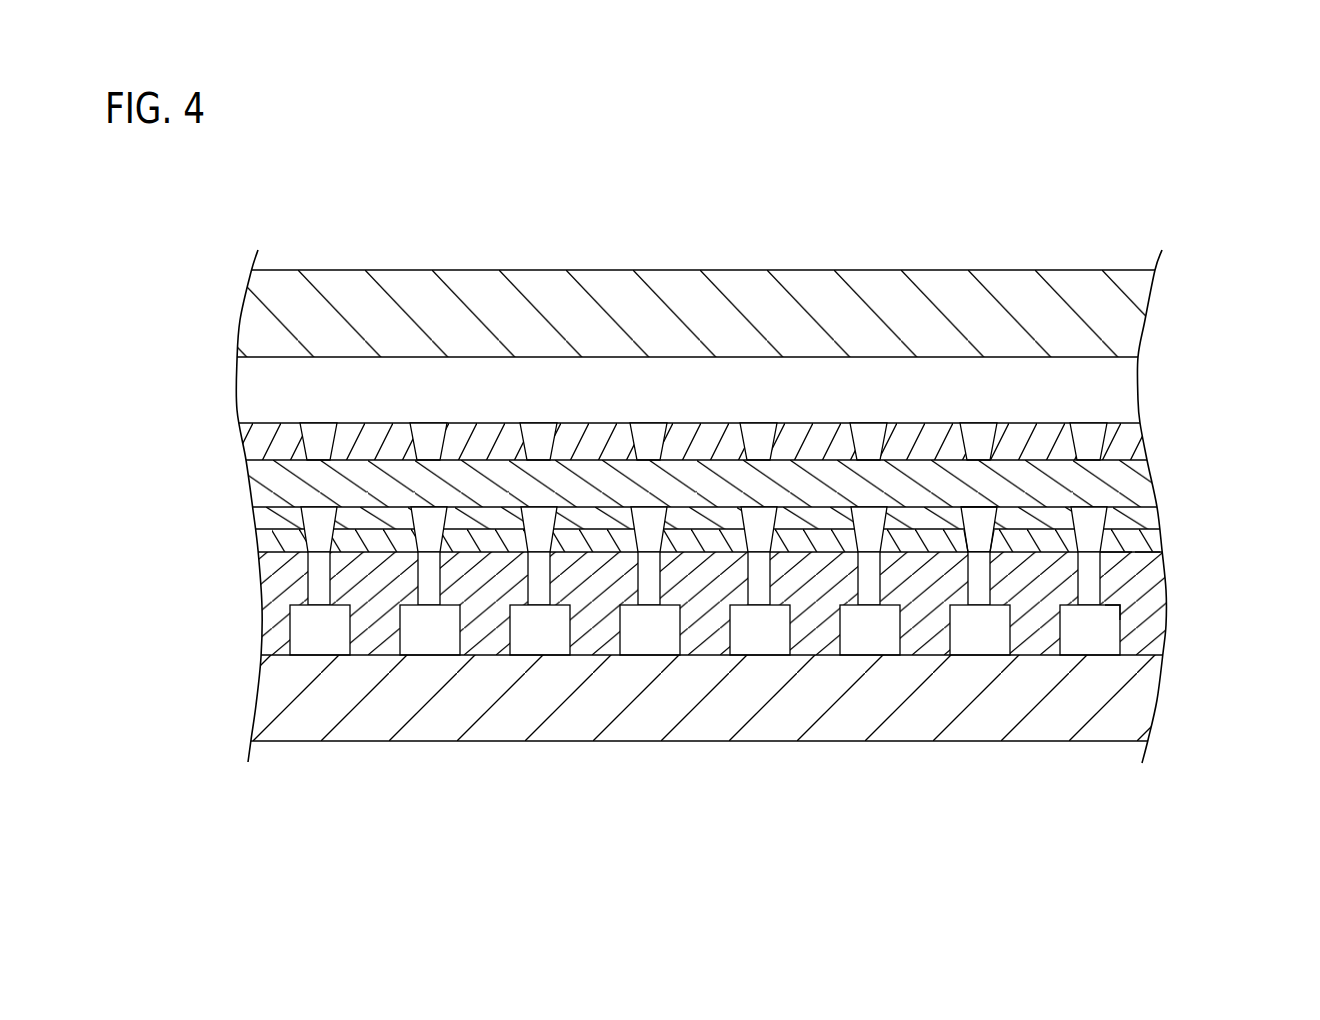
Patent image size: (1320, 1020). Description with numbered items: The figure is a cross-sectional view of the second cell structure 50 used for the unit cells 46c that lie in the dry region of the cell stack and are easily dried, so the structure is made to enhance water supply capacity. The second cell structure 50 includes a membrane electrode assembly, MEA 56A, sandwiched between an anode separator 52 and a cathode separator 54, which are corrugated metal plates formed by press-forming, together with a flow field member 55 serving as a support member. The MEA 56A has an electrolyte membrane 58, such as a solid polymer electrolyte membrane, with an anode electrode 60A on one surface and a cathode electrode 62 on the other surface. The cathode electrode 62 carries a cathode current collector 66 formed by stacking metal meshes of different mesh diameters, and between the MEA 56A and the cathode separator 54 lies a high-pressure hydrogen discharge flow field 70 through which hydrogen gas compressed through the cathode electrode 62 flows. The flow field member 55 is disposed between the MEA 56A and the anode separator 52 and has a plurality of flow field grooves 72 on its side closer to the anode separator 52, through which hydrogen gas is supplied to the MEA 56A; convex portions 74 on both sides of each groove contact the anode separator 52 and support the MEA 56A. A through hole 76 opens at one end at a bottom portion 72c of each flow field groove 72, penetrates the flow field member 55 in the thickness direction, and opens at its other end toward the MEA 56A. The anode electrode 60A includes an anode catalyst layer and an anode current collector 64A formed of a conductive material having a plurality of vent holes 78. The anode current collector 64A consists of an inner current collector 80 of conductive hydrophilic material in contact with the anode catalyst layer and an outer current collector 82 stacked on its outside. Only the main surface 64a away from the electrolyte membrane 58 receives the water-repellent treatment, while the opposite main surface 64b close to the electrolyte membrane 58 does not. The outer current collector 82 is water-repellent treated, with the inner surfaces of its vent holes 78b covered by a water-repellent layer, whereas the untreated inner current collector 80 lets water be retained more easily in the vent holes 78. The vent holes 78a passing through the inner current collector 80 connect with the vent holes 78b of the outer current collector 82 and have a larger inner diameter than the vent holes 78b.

The second cell structure 50 is at (710, 475).
The unit cells 46c is at (710, 475).
The anode separator 52 is at (1147, 699).
The cathode separator 54 is at (1125, 320).
The flow field member 55 is at (722, 667).
The MEA 56A is at (710, 512).
The electrolyte membrane 58 is at (268, 488).
The anode electrode 60A is at (740, 549).
The cathode electrode 62 is at (262, 444).
The anode current collector 64A is at (761, 522).
The main surface 64a is at (1122, 553).
The second surface 64b is at (1147, 558).
The cathode current collector 66 is at (706, 440).
The high-pressure hydrogen discharge flow field 70 is at (678, 405).
The flow field grooves 72 is at (985, 643).
The bottom portion 72c is at (1112, 610).
The convex portions 74 is at (1150, 640).
The through hole 76 is at (1097, 578).
The vent holes 78 is at (704, 360).
The vent hole 78a is at (974, 515).
The vent hole 78b is at (963, 545).
The inner current collector 80 is at (1138, 517).
The outer current collector 82 is at (1145, 542).